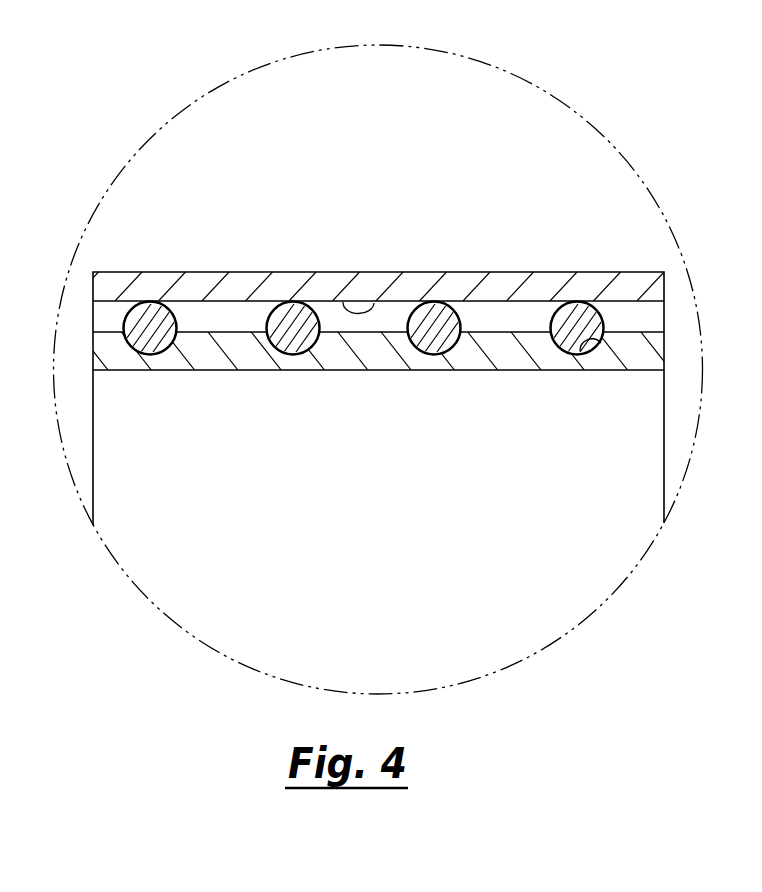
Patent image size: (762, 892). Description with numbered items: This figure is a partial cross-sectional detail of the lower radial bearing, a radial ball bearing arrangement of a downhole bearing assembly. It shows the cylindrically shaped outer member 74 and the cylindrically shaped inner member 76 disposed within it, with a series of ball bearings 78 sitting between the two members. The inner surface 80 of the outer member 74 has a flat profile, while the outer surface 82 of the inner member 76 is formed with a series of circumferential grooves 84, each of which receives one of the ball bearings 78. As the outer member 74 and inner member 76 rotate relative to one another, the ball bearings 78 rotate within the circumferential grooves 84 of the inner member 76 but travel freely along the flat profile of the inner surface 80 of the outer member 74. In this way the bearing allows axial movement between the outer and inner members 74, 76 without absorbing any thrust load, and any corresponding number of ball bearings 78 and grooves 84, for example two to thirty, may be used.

The outer member 74 is at (208, 280).
The inner member 76 is at (133, 360).
The ball bearings 78 is at (149, 322).
The inner surface 80 is at (374, 303).
The outer surface 82 is at (107, 332).
The circumferential grooves 84 is at (578, 353).